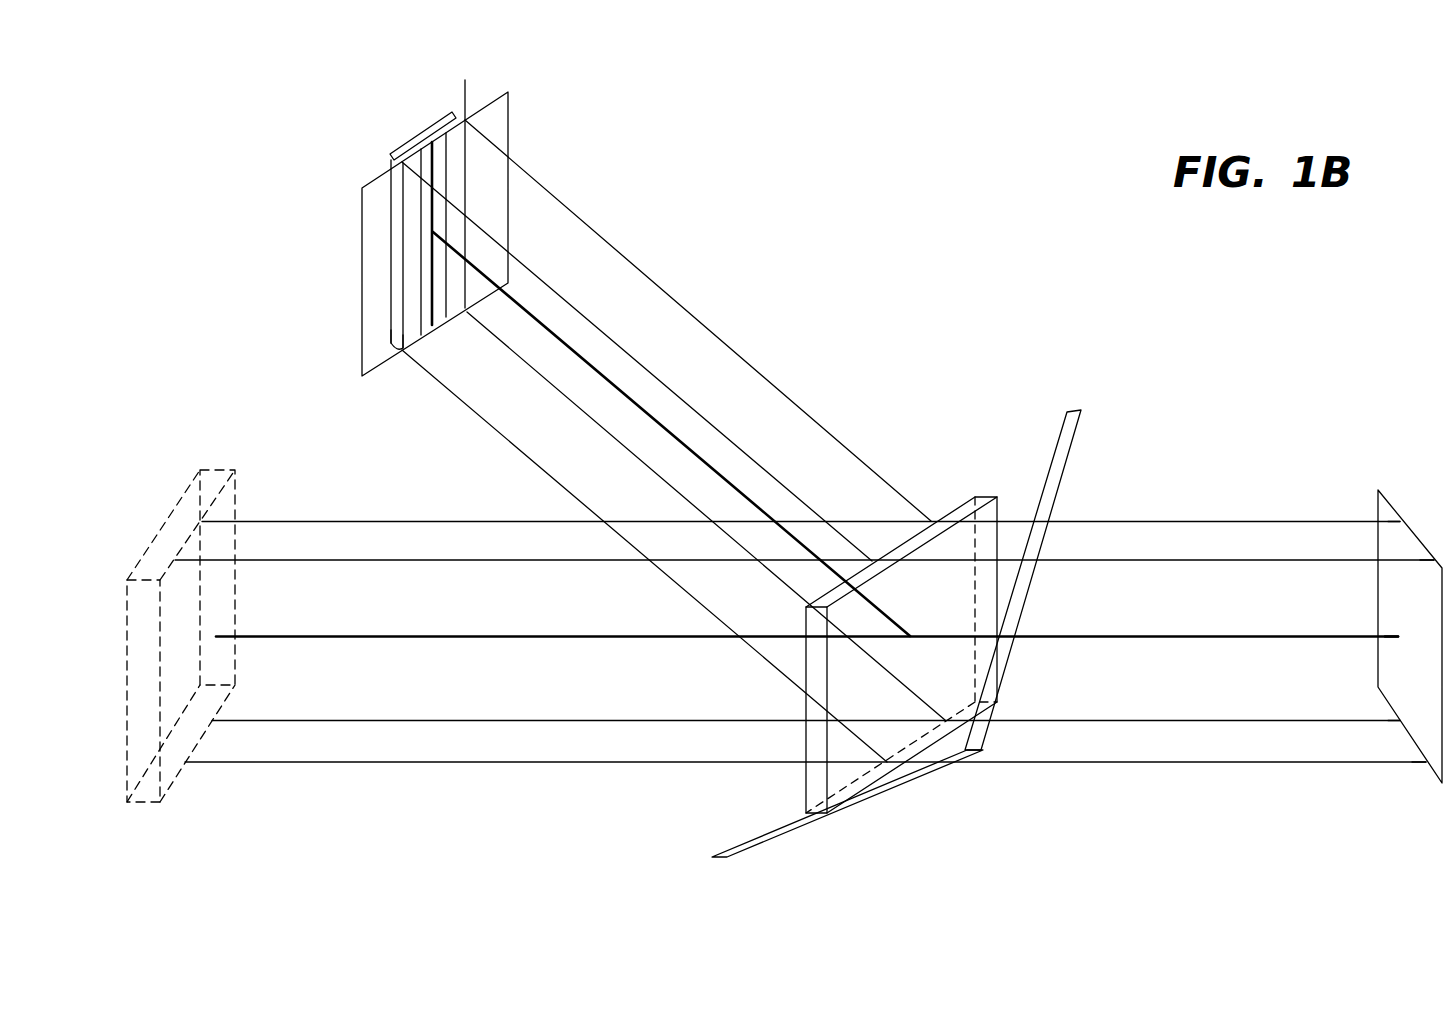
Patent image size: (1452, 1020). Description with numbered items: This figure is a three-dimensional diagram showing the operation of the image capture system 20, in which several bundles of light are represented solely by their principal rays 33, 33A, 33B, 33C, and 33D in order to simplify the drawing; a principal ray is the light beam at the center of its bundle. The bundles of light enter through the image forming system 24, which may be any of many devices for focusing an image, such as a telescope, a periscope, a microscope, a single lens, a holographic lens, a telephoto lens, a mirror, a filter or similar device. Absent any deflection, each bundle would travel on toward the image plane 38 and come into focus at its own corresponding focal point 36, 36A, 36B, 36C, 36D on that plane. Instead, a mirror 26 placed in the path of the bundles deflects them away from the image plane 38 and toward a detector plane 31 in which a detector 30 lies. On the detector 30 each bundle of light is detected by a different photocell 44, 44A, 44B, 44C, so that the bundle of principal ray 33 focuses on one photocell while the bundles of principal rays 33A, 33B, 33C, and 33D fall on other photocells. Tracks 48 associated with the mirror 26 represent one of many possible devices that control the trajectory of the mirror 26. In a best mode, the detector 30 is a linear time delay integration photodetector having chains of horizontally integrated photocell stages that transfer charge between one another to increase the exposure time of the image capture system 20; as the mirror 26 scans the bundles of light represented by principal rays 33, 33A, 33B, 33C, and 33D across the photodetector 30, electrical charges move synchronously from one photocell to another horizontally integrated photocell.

The image capture system 20 is at (985, 312).
The image forming system 24 is at (190, 485).
The mirror 26 is at (965, 505).
The detector 30 is at (422, 134).
The detector plane 31 is at (495, 132).
The principal ray 33 is at (548, 326).
The principal ray 33A is at (710, 437).
The principal ray 33B is at (690, 311).
The principal ray 33C is at (478, 416).
The principal ray 33D is at (543, 378).
The corresponding focal point 36 is at (1398, 637).
The corresponding focal point 36A is at (1434, 562).
The corresponding focal point 36B is at (1398, 520).
The corresponding focal point 36C is at (1426, 762).
The corresponding focal point 36D is at (1398, 722).
The image plane 38 is at (1378, 508).
The photocell 44 is at (438, 208).
The photocell 44A is at (392, 160).
The photocell 44B is at (465, 80).
The photocell 44C is at (392, 350).
The tracks 48 is at (1083, 420).